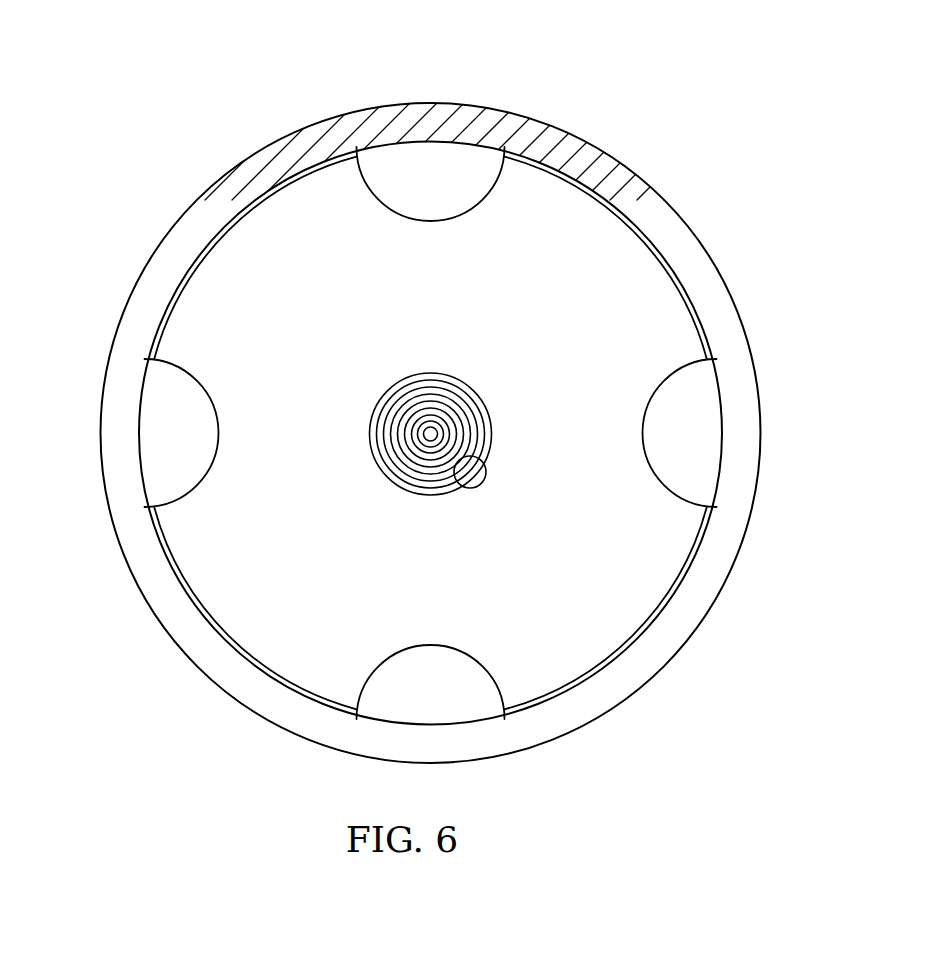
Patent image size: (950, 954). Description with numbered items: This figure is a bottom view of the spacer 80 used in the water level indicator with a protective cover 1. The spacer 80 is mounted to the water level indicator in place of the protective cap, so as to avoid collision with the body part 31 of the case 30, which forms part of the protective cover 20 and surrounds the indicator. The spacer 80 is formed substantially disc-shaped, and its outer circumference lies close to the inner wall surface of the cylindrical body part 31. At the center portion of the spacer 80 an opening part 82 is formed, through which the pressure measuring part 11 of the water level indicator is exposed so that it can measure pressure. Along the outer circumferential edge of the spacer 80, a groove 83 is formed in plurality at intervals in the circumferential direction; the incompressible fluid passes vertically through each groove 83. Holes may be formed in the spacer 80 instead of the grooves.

The water level indicator with a protective cover 1 is at (156, 160).
The protective cover 20 is at (282, 126).
The case 30 is at (575, 128).
The body part 31 is at (627, 237).
The spacer 80 is at (660, 196).
The groove 83 is at (428, 222).
The pressure measuring part 11 is at (447, 415).
The opening part 82 is at (486, 476).